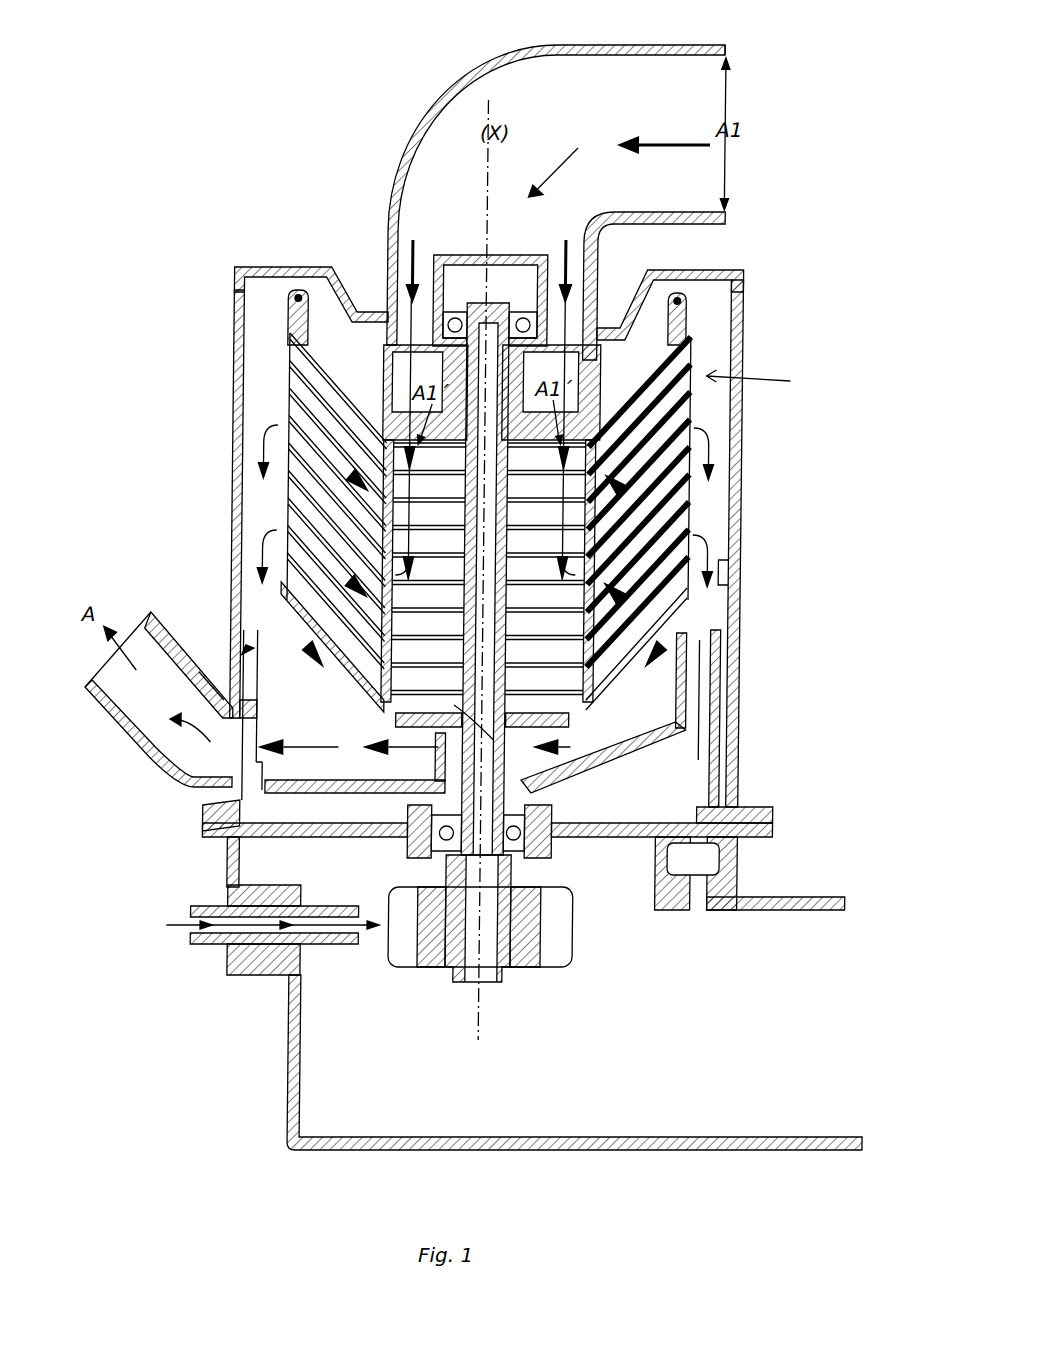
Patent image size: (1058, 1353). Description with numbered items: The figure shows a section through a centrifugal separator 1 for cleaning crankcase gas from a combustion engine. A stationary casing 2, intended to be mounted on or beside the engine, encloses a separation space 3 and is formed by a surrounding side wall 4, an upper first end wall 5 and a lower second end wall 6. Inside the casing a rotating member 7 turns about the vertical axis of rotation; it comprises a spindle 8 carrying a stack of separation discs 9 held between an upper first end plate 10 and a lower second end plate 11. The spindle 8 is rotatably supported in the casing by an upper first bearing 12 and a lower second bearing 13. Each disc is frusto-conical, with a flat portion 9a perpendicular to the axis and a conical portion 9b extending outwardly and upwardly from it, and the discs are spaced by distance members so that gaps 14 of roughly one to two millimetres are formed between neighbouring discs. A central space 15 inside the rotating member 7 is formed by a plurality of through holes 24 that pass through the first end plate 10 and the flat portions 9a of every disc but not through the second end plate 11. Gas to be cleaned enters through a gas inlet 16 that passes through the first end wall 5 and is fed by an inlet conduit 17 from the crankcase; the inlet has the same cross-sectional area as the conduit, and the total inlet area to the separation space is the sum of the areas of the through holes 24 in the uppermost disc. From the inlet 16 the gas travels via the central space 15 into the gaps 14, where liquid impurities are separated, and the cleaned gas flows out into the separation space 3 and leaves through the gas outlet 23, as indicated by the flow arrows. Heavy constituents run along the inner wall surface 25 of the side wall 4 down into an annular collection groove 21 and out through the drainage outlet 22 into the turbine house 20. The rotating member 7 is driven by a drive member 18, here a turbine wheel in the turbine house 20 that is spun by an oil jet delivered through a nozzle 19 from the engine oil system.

The centrifugal separator 1 is at (294, 180).
The stationary casing 2 is at (232, 268).
The separation space 3 is at (705, 338).
The surrounding side wall 4 is at (742, 446).
The first end wall 5 is at (714, 272).
The second end wall 6 is at (246, 832).
The rotating member 7 is at (759, 382).
The spindle 8 is at (430, 380).
The separation discs 9 is at (338, 470).
The flat portion 9a is at (600, 646).
The conical portion 9b is at (690, 600).
The first end plate 10 is at (300, 326).
The second end plate 11 is at (683, 612).
The first bearing 12 is at (527, 326).
The second bearing 13 is at (282, 872).
The gaps 14 is at (688, 490).
The central space 15 is at (440, 650).
The gas inlet 16 is at (452, 240).
The inlet conduit 17 is at (722, 48).
The drive member 18 is at (556, 952).
The nozzle 19 is at (328, 952).
The turbine house 20 is at (378, 1105).
The annular collection groove 21 is at (722, 702).
The drainage outlet 22 is at (690, 838).
The gas outlet 23 is at (226, 752).
The through holes 24 is at (620, 742).
The inner wall surface 25 is at (742, 557).